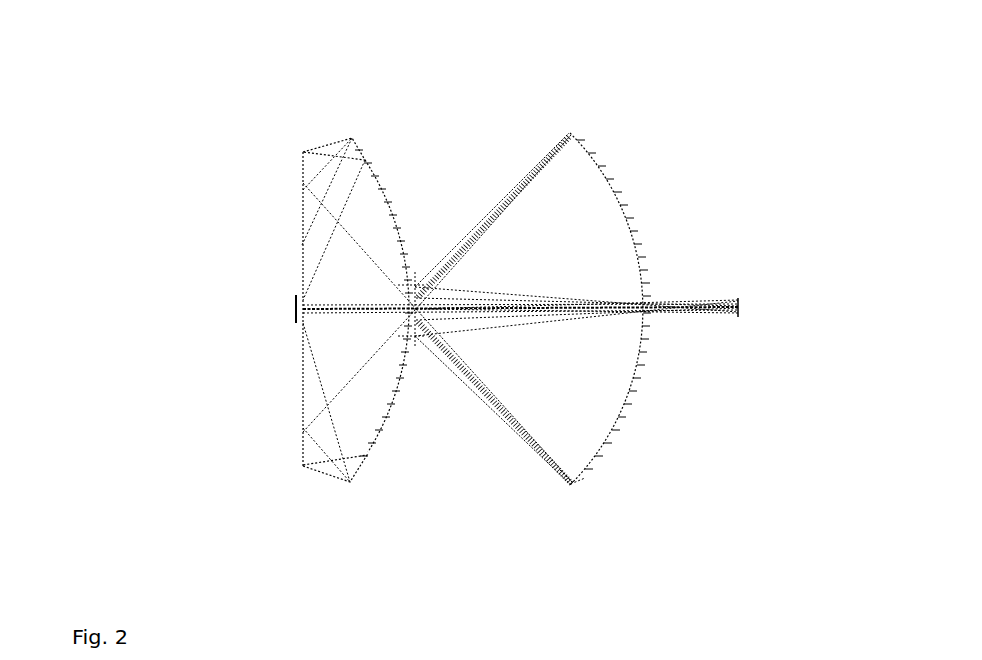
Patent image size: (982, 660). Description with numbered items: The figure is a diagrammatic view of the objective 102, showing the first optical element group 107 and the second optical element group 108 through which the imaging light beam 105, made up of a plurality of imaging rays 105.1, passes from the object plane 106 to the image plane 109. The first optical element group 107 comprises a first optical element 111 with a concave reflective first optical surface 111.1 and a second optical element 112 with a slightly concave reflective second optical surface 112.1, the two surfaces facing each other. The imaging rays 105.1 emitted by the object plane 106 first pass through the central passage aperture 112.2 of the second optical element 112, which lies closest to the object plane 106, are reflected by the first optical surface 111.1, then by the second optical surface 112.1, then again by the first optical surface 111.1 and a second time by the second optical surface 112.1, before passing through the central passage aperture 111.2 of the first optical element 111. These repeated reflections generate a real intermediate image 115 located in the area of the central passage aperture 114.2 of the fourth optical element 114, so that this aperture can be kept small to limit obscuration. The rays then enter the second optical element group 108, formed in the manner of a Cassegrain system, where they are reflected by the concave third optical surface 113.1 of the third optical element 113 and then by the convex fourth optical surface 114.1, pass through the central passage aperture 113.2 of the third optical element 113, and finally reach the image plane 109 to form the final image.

The objective 102 is at (720, 64).
The imaging light beam 105 is at (462, 224).
The imaging rays 105.1 is at (322, 474).
The object plane 106 is at (294, 300).
The first optical element group 107 is at (312, 126).
The second optical element group 108 is at (587, 123).
The image plane 109 is at (742, 317).
The first optical element 111 is at (358, 471).
The first optical surface 111.1 is at (388, 228).
The central passage aperture of the first optical element 111.2 is at (311, 336).
The second optical element 112 is at (304, 470).
The second optical surface 112.1 is at (308, 194).
The central passage aperture of the second optical element 112.2 is at (294, 318).
The third optical element 113 is at (582, 474).
The third optical surface 113.1 is at (600, 172).
The central passage aperture of the third optical element 113.2 is at (648, 315).
The fourth optical element 114 is at (413, 334).
The fourth optical surface 114.1 is at (419, 287).
The central passage aperture of the fourth optical element 114.2 is at (420, 314).
The intermediate image 115 is at (404, 295).